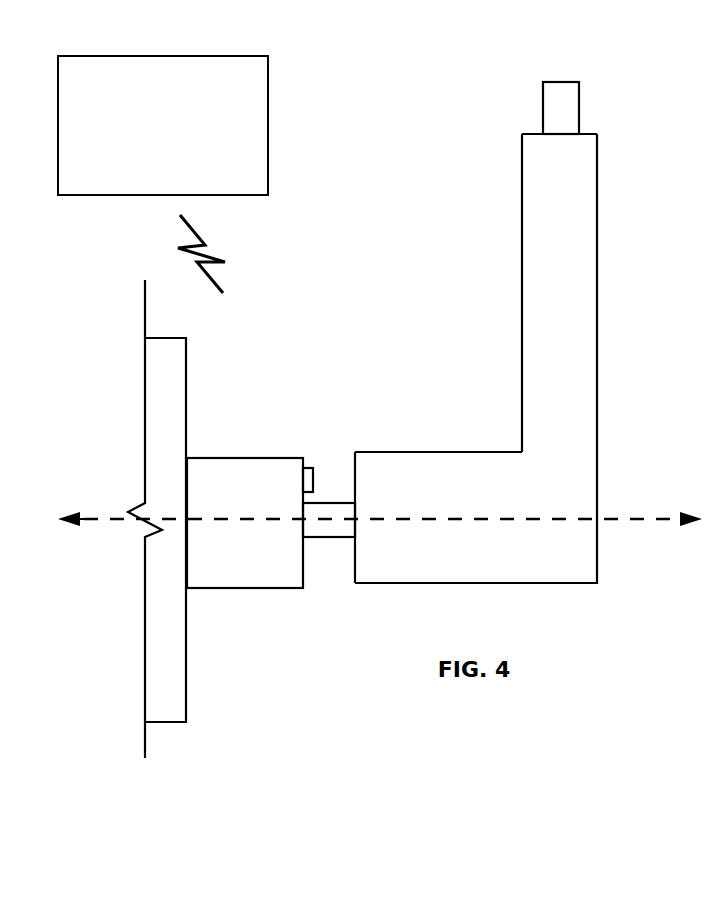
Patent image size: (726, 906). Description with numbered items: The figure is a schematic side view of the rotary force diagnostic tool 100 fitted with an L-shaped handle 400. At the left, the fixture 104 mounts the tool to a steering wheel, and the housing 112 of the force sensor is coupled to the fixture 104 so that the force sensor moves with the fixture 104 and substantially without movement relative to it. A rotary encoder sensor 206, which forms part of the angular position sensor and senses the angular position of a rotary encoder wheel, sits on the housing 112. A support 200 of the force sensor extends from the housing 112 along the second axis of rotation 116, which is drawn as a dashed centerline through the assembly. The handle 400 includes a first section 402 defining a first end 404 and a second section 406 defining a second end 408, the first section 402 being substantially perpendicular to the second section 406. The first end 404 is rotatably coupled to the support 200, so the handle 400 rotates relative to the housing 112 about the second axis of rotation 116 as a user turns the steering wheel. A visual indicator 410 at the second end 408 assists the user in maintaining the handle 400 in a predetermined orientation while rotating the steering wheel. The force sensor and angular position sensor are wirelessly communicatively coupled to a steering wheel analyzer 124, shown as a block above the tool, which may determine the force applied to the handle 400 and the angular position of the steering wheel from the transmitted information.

The steering wheel analyzer 124 is at (163, 125).
The rotary force diagnostic tool 100 is at (254, 390).
The fixture 104 is at (167, 722).
The housing 112 is at (240, 535).
The second axis of rotation 116 is at (120, 521).
The support 200 is at (328, 527).
The rotary encoder sensor 206 is at (312, 480).
The handle 400 is at (384, 144).
The first section 402 is at (392, 558).
The first end 404 is at (354, 572).
The second section 406 is at (562, 255).
The second end 408 is at (542, 134).
The visual indicator 410 is at (558, 80).